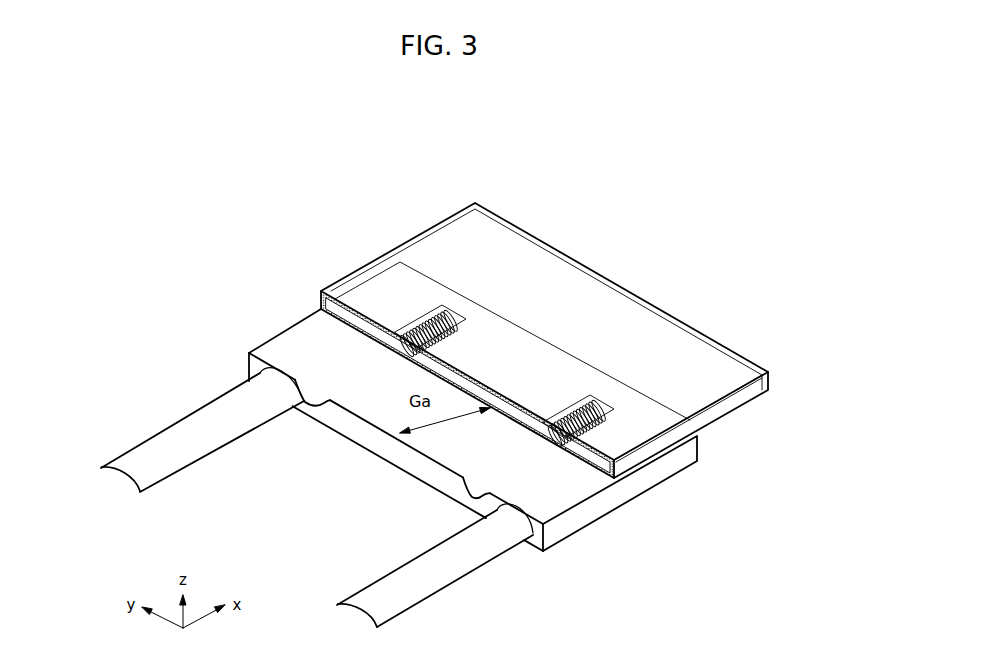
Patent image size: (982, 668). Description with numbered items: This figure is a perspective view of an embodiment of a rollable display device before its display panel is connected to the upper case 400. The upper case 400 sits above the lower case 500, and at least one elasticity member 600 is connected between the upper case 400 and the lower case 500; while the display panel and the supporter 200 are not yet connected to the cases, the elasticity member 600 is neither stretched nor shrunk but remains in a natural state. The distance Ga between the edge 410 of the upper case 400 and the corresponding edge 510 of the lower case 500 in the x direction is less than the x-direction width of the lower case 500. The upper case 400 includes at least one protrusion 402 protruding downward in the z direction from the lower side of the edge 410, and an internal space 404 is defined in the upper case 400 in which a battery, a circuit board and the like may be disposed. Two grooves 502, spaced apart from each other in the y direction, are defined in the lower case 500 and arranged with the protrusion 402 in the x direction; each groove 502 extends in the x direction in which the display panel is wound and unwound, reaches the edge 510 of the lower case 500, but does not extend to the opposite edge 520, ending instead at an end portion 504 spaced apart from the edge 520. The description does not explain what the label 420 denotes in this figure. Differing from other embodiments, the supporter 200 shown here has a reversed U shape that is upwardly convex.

The supporter 200 is at (165, 437).
The upper case 400 is at (612, 280).
The protrusion 402 is at (385, 358).
The internal space 404 is at (447, 482).
The edge 410 is at (460, 369).
The side wall of cover 420 is at (676, 314).
The lower case 500 is at (382, 450).
The groove 502 is at (320, 404).
The end portion 504 is at (442, 305).
The edge 510 is at (340, 433).
The opposite edge 520 is at (655, 403).
The elasticity member 600 is at (417, 334).